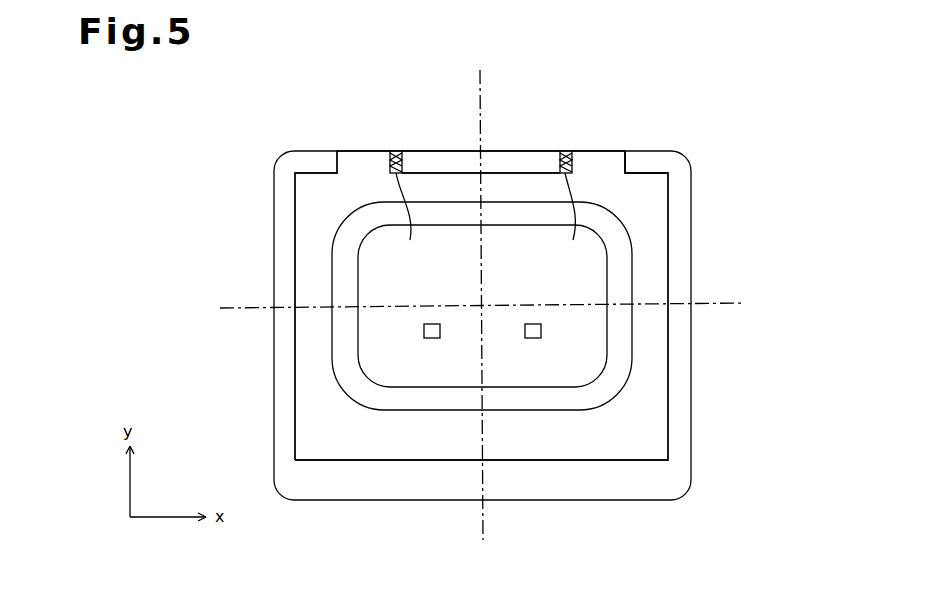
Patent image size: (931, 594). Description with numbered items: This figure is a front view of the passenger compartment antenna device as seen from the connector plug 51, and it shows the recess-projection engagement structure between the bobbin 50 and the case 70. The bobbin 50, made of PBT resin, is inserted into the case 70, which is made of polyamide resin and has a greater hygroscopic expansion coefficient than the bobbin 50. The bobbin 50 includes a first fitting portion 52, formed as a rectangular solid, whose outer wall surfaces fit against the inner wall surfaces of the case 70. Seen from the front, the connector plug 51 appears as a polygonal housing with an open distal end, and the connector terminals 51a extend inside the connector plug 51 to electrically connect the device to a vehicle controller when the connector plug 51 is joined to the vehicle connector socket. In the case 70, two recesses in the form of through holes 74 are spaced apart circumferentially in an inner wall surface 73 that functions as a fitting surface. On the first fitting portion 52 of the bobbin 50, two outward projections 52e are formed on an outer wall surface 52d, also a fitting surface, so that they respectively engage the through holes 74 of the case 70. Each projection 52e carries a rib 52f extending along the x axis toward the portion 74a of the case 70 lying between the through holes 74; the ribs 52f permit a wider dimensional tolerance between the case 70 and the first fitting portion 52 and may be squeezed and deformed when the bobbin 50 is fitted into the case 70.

The case 70 is at (691, 190).
The first fitting portion 52 is at (650, 405).
The bobbin 50 is at (481, 305).
The projections 52e is at (352, 151).
The outer wall surfaces 52d is at (643, 173).
The inner wall surface 73 is at (508, 176).
The portion of the case between the through holes 74a is at (481, 161).
The recesses (through holes) 74 is at (396, 151).
The rib 52f is at (488, 221).
The connector plug 51 is at (620, 278).
The connector terminals 51a is at (432, 338).